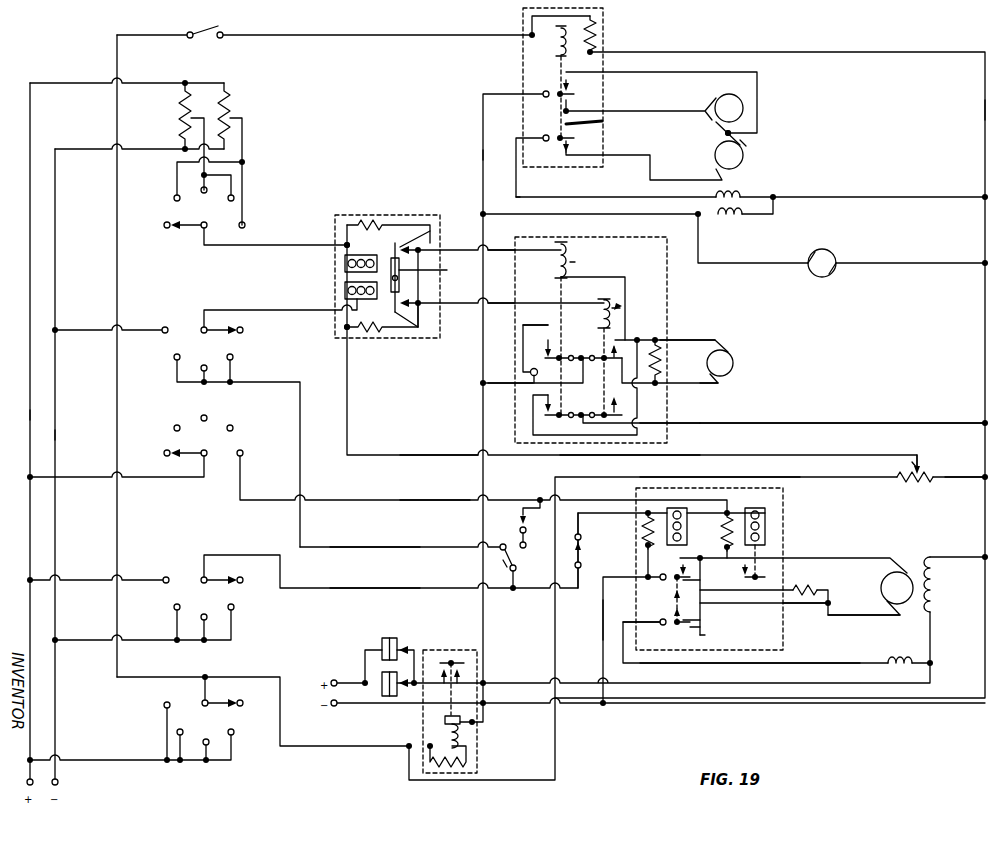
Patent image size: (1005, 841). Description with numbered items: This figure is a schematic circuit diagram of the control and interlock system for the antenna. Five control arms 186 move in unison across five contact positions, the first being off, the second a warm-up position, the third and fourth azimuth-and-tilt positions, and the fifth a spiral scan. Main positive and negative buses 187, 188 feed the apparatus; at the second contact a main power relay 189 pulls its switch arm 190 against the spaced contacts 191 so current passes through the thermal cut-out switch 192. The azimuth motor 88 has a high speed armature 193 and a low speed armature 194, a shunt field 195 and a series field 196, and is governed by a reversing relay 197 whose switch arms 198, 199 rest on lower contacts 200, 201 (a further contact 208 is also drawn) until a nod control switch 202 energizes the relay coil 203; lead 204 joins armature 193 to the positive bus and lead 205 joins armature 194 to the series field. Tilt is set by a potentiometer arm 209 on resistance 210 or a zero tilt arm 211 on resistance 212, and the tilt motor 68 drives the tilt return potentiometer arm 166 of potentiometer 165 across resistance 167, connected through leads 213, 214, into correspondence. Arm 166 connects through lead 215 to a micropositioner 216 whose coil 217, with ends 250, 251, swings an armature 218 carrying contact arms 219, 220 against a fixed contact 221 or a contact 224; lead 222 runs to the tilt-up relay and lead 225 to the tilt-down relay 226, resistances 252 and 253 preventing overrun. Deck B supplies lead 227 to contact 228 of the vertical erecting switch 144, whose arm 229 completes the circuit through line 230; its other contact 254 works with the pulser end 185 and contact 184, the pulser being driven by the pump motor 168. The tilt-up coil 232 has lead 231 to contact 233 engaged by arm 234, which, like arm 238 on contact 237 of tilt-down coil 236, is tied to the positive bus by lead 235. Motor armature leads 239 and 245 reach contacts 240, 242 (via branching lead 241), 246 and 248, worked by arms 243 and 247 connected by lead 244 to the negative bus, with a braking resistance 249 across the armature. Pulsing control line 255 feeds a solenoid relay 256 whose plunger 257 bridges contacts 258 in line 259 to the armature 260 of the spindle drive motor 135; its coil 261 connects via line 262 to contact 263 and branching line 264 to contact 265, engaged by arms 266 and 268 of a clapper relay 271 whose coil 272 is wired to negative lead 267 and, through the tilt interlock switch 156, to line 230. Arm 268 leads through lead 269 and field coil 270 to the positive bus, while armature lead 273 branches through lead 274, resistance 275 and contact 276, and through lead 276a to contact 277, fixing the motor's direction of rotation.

The tilt motor 68 is at (740, 363).
The azimuth motor 88 is at (757, 143).
The solenoid 135 is at (912, 562).
The vertical erecting switch 144 is at (492, 572).
The tilt interlock switch 156 is at (588, 556).
The potentiometer 165 is at (928, 456).
The tilt return potentiometer arm 166 is at (912, 464).
The resistance 167 is at (904, 482).
The pump motor 168 is at (832, 276).
The contact 184 is at (526, 530).
The other end of pulser 185 is at (542, 498).
The control arms 186 is at (210, 733).
The positive bus 187 is at (482, 151).
The negative bus 188 is at (985, 112).
The main power relay 189 is at (480, 745).
The switch arm 190 is at (452, 660).
The spaced contacts 191 is at (460, 676).
The thermal cut-out switch 192 is at (410, 620).
The high speed armature 193 is at (714, 108).
The low speed armature 194 is at (714, 154).
The shunt field 195 is at (732, 218).
The series field 196 is at (740, 194).
The reversing relay 197 is at (515, 70).
The switch arm 198 is at (546, 92).
The switch arm 199 is at (546, 136).
The lower switch contact 200 is at (570, 106).
The lower switch contact 201 is at (572, 150).
The nod control switch 202 is at (208, 32).
The relay coil 203 is at (551, 42).
The lead 204 is at (720, 132).
The lead 205 is at (638, 168).
The contact bar 208 is at (601, 126).
The potentiometer arm 209 is at (205, 112).
The potentiometer resistance 210 is at (182, 112).
The zero tilt arm 211 is at (246, 118).
The second potentiometer resistance 212 is at (232, 108).
The lead 213 is at (962, 482).
The lead 214 is at (670, 477).
The lead 215 is at (456, 444).
The micropositioner 216 is at (415, 188).
The electromagnetic coil 217 is at (344, 276).
The armature 218 is at (433, 275).
The contact arm 219 is at (432, 236).
The contact arm 220 is at (412, 317).
The fixed contact 221 is at (425, 248).
The lead 222 is at (498, 248).
The contact 224 is at (425, 300).
The lead 225 is at (508, 298).
The tilt-down relay 226 is at (622, 306).
The lead 227 is at (392, 546).
The contact 228 is at (503, 544).
The switch arm 229 is at (516, 568).
The line 230 is at (388, 590).
The lead 231 is at (616, 274).
The electromagnetic coil 232 is at (556, 260).
The contact 233 is at (590, 250).
The arm 234 is at (596, 356).
The lead 235 is at (508, 374).
The electromagnetic coil 236 is at (598, 312).
The contact 237 is at (532, 378).
The arm 238 is at (540, 355).
The upper lead 239 is at (692, 338).
The contact 240 is at (615, 345).
The branching lead 241 is at (640, 420).
The contact 242 is at (540, 412).
The arm 243 is at (545, 424).
The lead 244 is at (788, 420).
The lead 245 is at (718, 390).
The contact 246 is at (610, 398).
The arm 247 is at (597, 455).
The contact 248 is at (550, 340).
The resistance 249 is at (663, 362).
The end of coil 250 is at (344, 328).
The point of coil 251 is at (345, 244).
The resistance 252 is at (364, 222).
The resistance 253 is at (380, 335).
The contact 254 is at (526, 546).
The pulsing control line 255 is at (409, 491).
The relay 256 is at (770, 524).
The plunger 257 is at (765, 545).
The spaced contacts 258 is at (770, 577).
The line 259 is at (842, 560).
The armature 260 is at (888, 583).
The coil 261 is at (768, 508).
The line 262 is at (718, 553).
The contact 263 is at (692, 572).
The branching line 264 is at (705, 636).
The contact 265 is at (667, 630).
The relay arm 266 is at (662, 582).
The lead 267 is at (600, 612).
The relay arm 268 is at (672, 620).
The lead 269 is at (665, 666).
The motor field coil 270 is at (898, 660).
The relay 271 is at (680, 528).
The coil 272 is at (680, 522).
The lead 273 is at (850, 618).
The branching lead 274 is at (737, 601).
The resistance 275 is at (818, 593).
The contact 276 is at (704, 602).
The branching lead 276a is at (805, 606).
The contact 277 is at (702, 628).